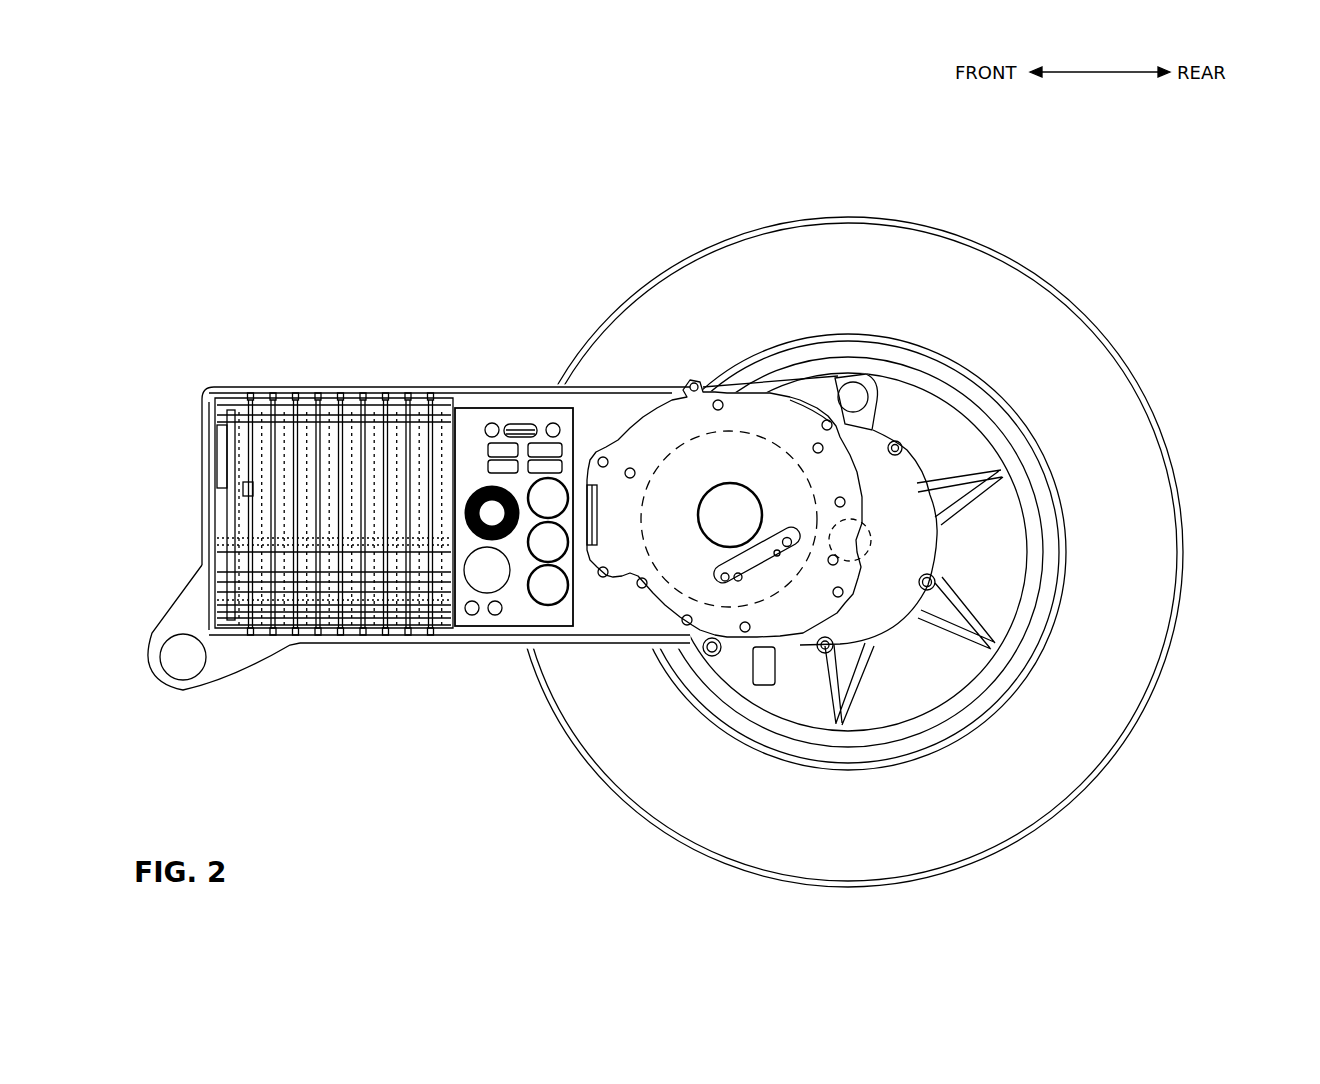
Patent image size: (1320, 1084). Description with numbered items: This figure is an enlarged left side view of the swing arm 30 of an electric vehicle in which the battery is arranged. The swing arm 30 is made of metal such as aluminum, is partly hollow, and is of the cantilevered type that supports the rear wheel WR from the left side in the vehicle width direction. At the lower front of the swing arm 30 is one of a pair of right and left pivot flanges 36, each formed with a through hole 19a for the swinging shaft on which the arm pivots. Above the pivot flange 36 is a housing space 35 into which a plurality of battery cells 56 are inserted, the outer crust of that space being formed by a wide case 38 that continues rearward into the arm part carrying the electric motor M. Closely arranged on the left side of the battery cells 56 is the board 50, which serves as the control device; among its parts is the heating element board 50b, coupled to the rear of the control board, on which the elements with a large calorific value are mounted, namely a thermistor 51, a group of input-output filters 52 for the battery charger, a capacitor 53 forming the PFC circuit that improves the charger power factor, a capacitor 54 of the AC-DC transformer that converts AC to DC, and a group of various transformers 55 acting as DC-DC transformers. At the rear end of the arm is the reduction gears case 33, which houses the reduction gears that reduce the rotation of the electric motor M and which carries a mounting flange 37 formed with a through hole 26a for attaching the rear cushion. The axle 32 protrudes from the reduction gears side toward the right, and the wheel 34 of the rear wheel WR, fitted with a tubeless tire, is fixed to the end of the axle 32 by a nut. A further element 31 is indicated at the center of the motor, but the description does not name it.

The through hole 19a is at (182, 660).
The through hole 26a is at (857, 392).
The swing arm 30 is at (277, 317).
The motor shaft hub 31 is at (731, 505).
The axle 32 is at (858, 560).
The reduction gears case 33 is at (922, 547).
The wheel 34 is at (998, 650).
The housing space 35 is at (360, 395).
The pivot flange 36 is at (220, 663).
The mounting flange 37 is at (827, 393).
The case 38 is at (248, 388).
The board 50 is at (451, 630).
The heating element board 50b is at (515, 612).
The thermistor 51 is at (521, 424).
The group of input-output filters 52 is at (478, 450).
The capacitor 53 is at (474, 505).
The capacitor 54 is at (487, 580).
The group of various transformers 55 is at (549, 608).
The battery cells 56 is at (347, 632).
The electric motor M is at (686, 436).
The rear wheel WR is at (1033, 810).